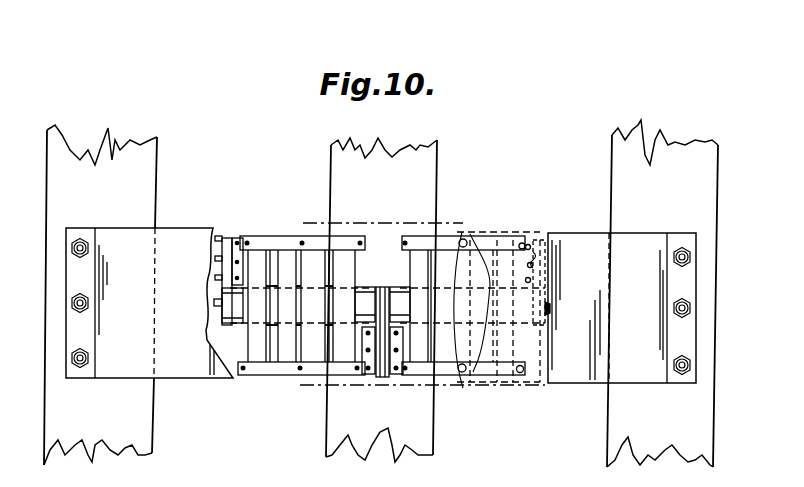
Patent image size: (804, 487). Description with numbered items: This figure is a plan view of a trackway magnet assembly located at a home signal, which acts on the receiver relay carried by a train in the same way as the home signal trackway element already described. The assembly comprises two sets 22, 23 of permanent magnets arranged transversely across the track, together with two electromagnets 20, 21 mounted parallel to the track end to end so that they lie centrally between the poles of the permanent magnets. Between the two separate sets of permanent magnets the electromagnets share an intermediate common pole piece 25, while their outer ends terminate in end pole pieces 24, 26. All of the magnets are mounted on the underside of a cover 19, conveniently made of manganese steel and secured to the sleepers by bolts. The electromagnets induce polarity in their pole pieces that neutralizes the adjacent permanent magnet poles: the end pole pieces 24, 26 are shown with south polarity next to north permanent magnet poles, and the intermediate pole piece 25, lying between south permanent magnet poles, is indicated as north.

The cover 19 is at (177, 242).
The electromagnet 20 is at (363, 298).
The electromagnet 21 is at (401, 298).
The set of permanent magnets 22 is at (300, 388).
The set of permanent magnets 23 is at (472, 298).
The end pole piece 24 is at (224, 236).
The intermediate common pole piece 25 is at (380, 377).
The end pole piece 26 is at (538, 238).